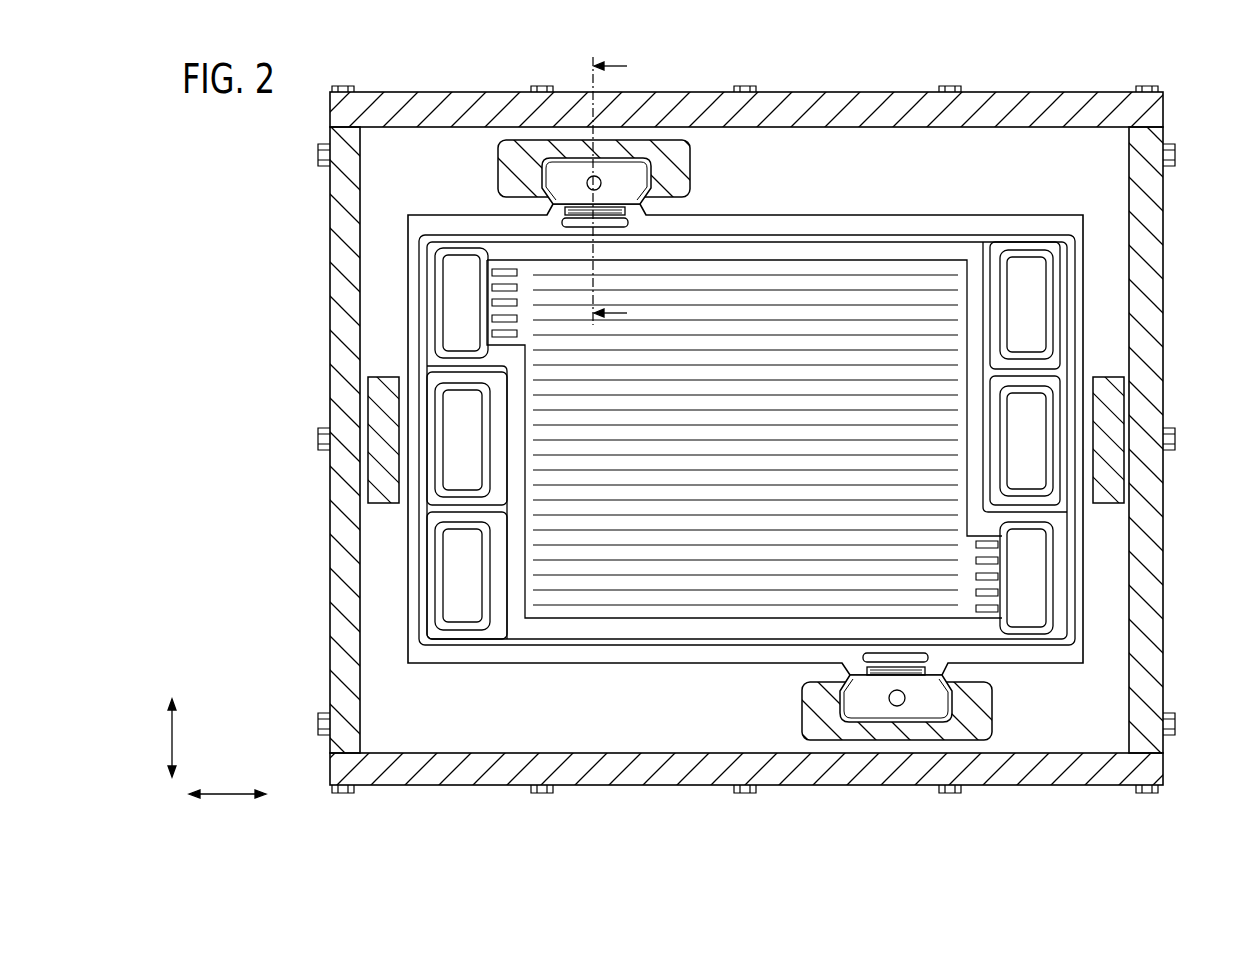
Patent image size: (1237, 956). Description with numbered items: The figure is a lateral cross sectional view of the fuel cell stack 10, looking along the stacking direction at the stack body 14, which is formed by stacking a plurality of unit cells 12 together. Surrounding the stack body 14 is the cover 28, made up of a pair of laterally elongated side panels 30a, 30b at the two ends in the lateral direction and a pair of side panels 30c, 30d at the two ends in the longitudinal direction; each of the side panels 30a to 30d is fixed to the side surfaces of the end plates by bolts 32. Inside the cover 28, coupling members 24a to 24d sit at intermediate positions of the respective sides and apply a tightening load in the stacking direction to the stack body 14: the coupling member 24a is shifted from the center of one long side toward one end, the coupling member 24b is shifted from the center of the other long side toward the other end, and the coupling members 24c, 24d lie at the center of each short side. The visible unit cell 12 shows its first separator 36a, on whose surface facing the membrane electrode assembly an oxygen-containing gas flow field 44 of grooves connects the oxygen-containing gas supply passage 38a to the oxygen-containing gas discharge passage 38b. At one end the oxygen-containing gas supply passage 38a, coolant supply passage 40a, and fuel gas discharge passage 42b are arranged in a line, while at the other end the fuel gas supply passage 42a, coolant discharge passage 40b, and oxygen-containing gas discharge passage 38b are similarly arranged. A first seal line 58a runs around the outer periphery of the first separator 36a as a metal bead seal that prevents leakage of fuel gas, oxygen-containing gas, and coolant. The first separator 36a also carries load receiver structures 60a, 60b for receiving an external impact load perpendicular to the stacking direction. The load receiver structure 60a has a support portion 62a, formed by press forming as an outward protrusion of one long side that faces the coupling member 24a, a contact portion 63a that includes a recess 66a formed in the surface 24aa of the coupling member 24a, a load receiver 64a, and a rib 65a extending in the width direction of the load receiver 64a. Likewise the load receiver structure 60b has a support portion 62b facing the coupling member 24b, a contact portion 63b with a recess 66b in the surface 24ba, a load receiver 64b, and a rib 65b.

The fuel cell stack 10 is at (249, 136).
The unit cell 12 is at (745, 410).
The stack body 14 is at (982, 215).
The coupling member 24a is at (667, 138).
The surface of coupling member 24aa is at (521, 202).
The coupling member 24b is at (820, 737).
The surface of coupling member 24ba is at (973, 678).
The coupling member 24c is at (385, 482).
The coupling member 24d is at (1103, 465).
The cover 28 is at (749, 433).
The side panel 30a is at (1040, 107).
The side panel 30b is at (495, 780).
The side panel 30c is at (340, 620).
The side panel 30d is at (1148, 607).
The bolt 32 is at (343, 86).
The first separator 36a is at (1054, 237).
The oxygen-containing gas supply passage 38a is at (455, 297).
The oxygen-containing gas discharge passage 38b is at (1035, 578).
The coolant supply passage 40a is at (455, 413).
The coolant discharge passage 40b is at (1035, 415).
The fuel gas supply passage 42a is at (1035, 296).
The fuel gas discharge passage 42b is at (455, 585).
The oxygen-containing gas flow field 44 is at (838, 275).
The first seal line 58a is at (930, 236).
The load receiver structure 60a is at (590, 137).
The load receiver structure 60b is at (904, 738).
The support portion 62a is at (598, 186).
The support portion 62b is at (852, 745).
The contact portion 63a is at (530, 173).
The contact portion 63b is at (835, 712).
The load receiver 64a is at (640, 173).
The load receiver 64b is at (953, 708).
The rib 65a is at (578, 224).
The rib 65b is at (908, 656).
The recess 66a is at (547, 178).
The recess 66b is at (852, 719).